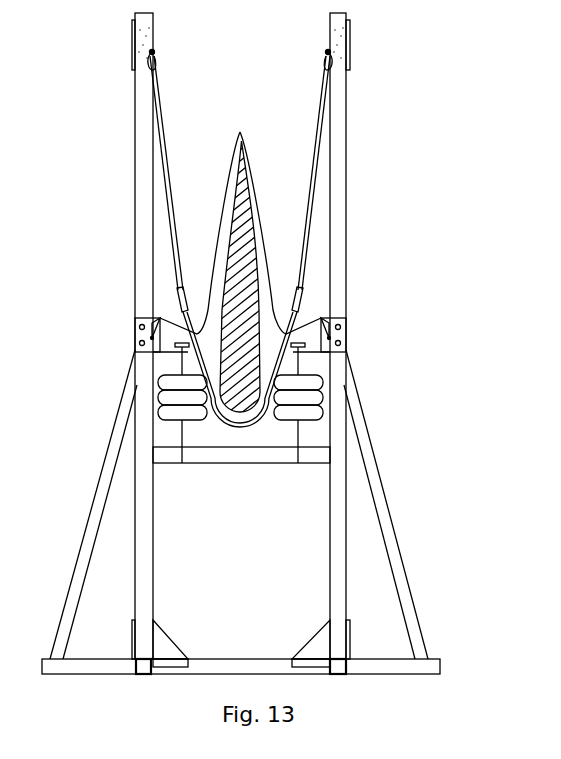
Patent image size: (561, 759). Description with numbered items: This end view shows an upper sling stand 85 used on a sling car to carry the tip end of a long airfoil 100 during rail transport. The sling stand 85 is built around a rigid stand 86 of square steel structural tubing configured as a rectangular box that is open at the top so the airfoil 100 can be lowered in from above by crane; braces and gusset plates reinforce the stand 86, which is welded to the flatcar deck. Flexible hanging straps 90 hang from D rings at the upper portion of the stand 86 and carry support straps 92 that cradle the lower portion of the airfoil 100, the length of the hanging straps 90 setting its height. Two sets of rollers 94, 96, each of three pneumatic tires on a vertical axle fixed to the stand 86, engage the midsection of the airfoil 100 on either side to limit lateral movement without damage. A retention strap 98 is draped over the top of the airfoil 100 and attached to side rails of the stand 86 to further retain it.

The sling stand 85 is at (108, 223).
The rigid stand 86 is at (346, 145).
The hanging straps 90 is at (163, 115).
The support straps 92 is at (252, 432).
The set of rollers 94 is at (157, 390).
The set of rollers 96 is at (323, 392).
The retention strap 98 is at (245, 147).
The airfoil 100 is at (258, 272).